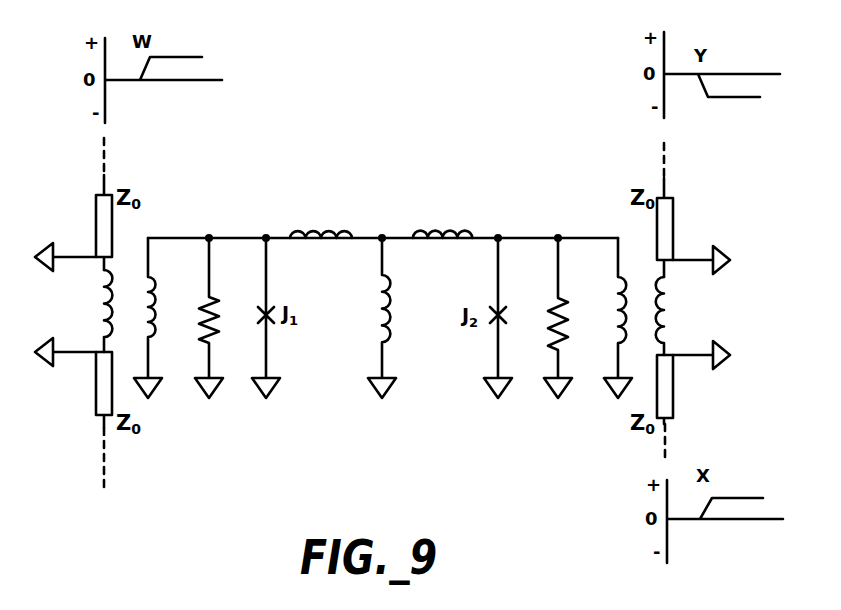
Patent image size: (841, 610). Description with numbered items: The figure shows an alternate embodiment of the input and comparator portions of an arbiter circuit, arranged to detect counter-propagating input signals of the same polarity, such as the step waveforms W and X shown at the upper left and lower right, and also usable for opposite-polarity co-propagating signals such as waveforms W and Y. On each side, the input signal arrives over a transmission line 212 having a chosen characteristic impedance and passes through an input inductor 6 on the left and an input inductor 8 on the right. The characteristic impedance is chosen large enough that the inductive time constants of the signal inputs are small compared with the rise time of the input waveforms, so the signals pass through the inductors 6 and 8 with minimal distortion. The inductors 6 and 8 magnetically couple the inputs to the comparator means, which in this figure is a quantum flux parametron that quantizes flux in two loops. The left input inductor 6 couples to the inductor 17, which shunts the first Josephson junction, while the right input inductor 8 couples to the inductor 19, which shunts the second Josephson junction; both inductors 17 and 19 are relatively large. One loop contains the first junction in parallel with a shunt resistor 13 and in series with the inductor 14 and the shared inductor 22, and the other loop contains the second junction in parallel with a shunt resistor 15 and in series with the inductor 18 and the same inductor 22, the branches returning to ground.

The transmission lines 212 is at (96, 217).
The inductor 6 is at (105, 318).
The inductor 17 is at (148, 288).
The shunt resistor 13 is at (203, 326).
The inductor 14 is at (347, 227).
The inductor 22 is at (392, 282).
The inductor 18 is at (467, 224).
The shunt resistor 15 is at (560, 301).
The inductor 19 is at (620, 307).
The inductor 8 is at (667, 303).